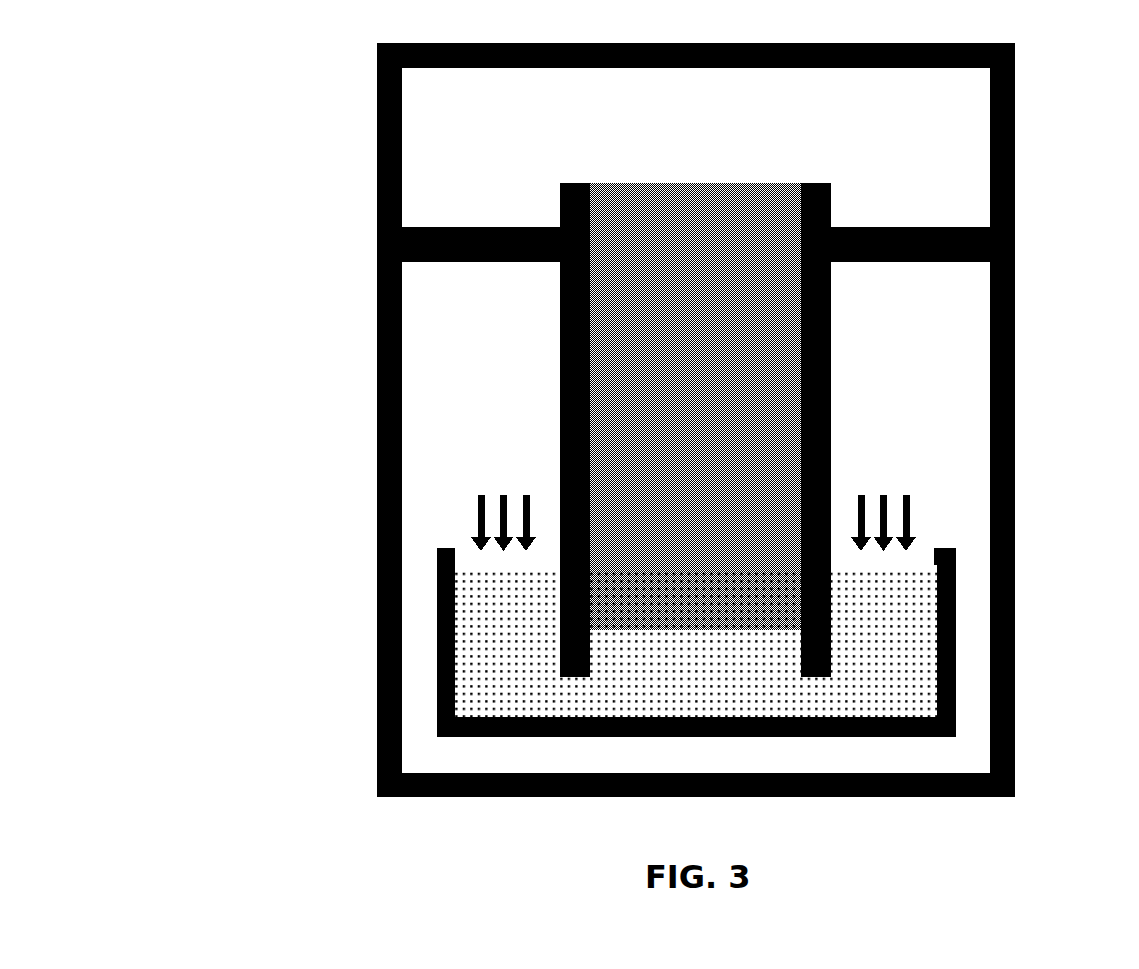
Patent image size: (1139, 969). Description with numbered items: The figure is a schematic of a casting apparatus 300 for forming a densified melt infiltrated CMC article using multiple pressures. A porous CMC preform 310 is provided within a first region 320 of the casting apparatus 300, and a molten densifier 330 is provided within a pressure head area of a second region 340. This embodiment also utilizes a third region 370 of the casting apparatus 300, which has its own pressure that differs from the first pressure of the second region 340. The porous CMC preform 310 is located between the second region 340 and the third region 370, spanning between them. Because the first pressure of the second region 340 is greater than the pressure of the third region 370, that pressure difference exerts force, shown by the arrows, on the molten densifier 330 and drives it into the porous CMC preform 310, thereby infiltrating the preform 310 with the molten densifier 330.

The casting apparatus 300 is at (318, 111).
The porous CMC preform 310 is at (719, 387).
The first region 320 is at (738, 418).
The molten densifier 330 is at (718, 682).
The second region 340 is at (957, 448).
The third region 370 is at (957, 150).